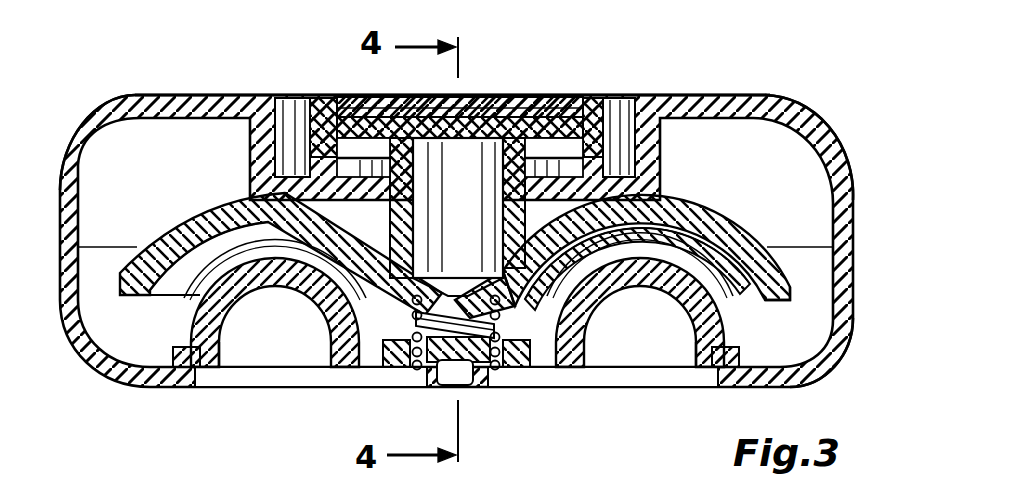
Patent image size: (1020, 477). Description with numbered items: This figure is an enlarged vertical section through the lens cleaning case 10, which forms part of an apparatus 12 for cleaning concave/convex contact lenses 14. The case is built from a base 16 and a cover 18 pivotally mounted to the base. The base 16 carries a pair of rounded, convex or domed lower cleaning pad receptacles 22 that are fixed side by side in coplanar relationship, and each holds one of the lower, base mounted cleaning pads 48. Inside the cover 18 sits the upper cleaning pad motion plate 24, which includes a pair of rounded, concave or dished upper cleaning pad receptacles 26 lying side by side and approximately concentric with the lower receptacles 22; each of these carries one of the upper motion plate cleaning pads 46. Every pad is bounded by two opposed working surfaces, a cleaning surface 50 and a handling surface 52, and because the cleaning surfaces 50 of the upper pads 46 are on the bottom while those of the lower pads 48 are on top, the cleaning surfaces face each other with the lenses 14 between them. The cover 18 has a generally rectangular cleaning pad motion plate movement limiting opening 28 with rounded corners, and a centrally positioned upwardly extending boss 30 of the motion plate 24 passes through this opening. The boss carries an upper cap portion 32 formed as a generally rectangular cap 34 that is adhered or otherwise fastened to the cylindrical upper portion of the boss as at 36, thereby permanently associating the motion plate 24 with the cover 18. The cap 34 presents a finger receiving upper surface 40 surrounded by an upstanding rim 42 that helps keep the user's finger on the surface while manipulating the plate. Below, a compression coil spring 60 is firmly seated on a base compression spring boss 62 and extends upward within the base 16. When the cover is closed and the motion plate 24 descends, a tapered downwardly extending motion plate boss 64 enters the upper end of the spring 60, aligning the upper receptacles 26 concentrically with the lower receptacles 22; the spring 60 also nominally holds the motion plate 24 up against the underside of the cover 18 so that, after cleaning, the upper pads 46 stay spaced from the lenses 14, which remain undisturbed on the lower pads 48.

The lens cleaning case 10 is at (70, 118).
The apparatus 12 is at (783, 80).
The contact lenses 14 is at (728, 224).
The base 16 is at (815, 324).
The cover 18 is at (806, 145).
The lower cleaning pad receptacles 22 is at (234, 296).
The upper cleaning pad motion plate 24 is at (226, 212).
The upper cleaning pad receptacles 26 is at (268, 206).
The cleaning pad motion plate movement limiting opening 28 is at (562, 188).
The boss 30 is at (540, 110).
The upper cap portion 32 is at (415, 112).
The cap 34 is at (314, 96).
The fastening location on boss upper portion 36 is at (385, 112).
The finger receiving upper surface 40 is at (500, 110).
The upstanding rim 42 is at (598, 100).
The upper motion plate cleaning pads 46 is at (180, 232).
The lower base mounted cleaning pads 48 is at (228, 320).
The cleaning surface 50 is at (176, 322).
The handling surface 52 is at (762, 245).
The compression coil spring 60 is at (490, 332).
The base compression spring boss 62 is at (455, 386).
The tapered downwardly extending motion plate boss 64 is at (456, 292).